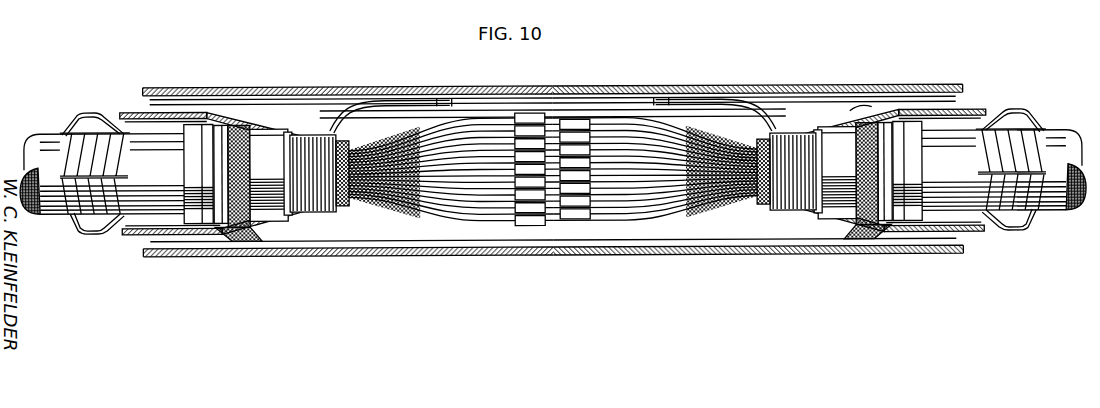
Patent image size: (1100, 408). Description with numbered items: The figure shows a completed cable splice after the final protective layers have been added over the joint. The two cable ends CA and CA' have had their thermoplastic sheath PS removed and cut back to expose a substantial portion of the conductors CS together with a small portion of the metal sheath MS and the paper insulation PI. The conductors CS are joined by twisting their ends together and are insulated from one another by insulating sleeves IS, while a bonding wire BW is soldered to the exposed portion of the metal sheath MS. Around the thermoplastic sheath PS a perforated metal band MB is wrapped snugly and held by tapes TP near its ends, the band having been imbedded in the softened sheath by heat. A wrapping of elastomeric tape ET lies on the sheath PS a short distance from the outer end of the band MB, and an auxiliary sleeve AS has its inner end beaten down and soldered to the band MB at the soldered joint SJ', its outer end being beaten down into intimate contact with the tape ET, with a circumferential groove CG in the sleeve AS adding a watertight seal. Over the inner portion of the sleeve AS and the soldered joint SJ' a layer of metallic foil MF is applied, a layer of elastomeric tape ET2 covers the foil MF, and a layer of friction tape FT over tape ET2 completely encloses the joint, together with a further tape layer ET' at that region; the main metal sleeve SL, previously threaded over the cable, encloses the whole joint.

The metal sleeve SL is at (418, 88).
The thermoplastic sheath PS is at (38, 136).
The cable end CA is at (39, 208).
The cable end CA' is at (1074, 205).
The elastomeric tape ET is at (562, 137).
The circumferential groove CG is at (117, 229).
The auxiliary sleeve AS is at (162, 110).
The tape TP is at (250, 117).
The soldered joint SJ' is at (873, 80).
The tape wrapping ET' is at (553, 138).
The elastomeric tape layer ET2 is at (247, 137).
The perforated metal band MB is at (231, 243).
The metallic foil MF is at (281, 218).
The friction tape FT is at (292, 222).
The metal sheath MS is at (322, 210).
The paper insulation PI is at (339, 200).
The conductors CS is at (627, 122).
The insulating sleeves IS is at (541, 120).
The bonding wire BW is at (377, 112).